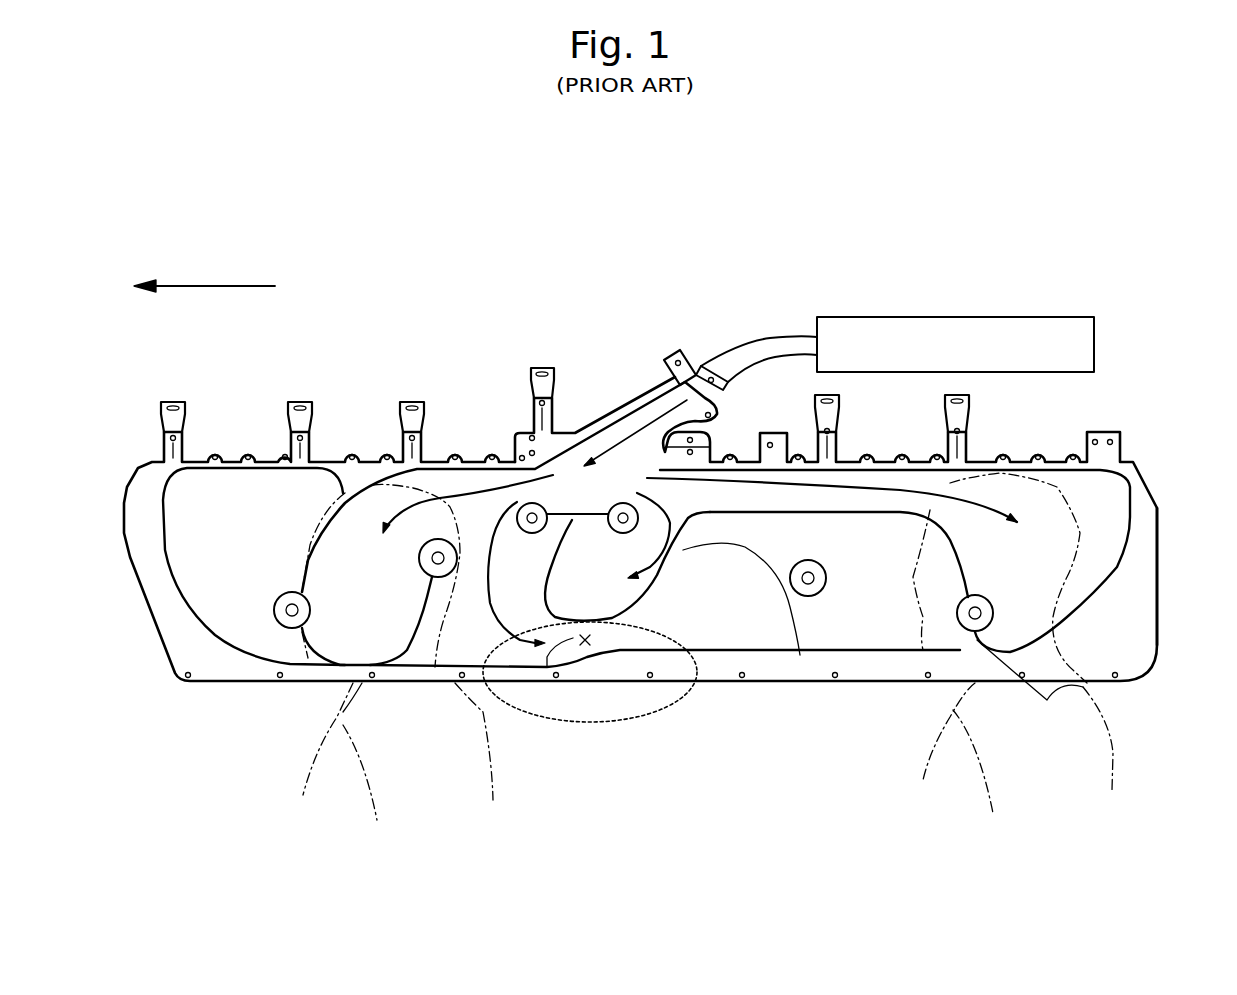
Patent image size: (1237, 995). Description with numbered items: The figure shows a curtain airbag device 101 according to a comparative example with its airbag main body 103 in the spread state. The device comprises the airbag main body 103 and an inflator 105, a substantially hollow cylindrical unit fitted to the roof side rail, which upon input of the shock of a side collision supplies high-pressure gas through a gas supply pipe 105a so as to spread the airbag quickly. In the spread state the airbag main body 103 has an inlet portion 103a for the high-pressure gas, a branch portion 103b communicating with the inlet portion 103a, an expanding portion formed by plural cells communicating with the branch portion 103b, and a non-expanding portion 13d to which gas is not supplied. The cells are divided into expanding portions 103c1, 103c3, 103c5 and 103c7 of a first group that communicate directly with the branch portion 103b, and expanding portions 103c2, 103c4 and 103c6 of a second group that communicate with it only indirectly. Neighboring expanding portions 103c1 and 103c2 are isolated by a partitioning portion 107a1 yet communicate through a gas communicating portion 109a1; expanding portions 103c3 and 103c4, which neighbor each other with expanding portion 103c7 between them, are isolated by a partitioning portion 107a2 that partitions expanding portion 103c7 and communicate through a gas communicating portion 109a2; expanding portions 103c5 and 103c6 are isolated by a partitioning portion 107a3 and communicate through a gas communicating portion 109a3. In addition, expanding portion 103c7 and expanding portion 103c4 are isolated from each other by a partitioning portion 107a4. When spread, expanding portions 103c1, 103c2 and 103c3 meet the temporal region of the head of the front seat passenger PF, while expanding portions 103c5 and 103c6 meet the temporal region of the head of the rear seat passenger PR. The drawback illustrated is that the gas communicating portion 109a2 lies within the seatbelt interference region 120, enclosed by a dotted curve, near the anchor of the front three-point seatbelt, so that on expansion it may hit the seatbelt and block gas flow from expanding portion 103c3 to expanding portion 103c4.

The curtain airbag device 101 is at (705, 200).
The airbag main body 103 is at (468, 362).
The inlet portion 103a is at (647, 394).
The branch portion 103b is at (556, 500).
The expanding portion 103c1 is at (341, 584).
The expanding portion 103c2 is at (209, 554).
The expanding portion 103c3 is at (470, 603).
The expanding portion 103c4 is at (719, 625).
The expanding portion 103c5 is at (987, 561).
The expanding portion 103c6 is at (839, 625).
The expanding portion 103c7 is at (564, 609).
The inflator 105 is at (952, 330).
The gas supply pipe 105a is at (770, 350).
The partitioning portion 107a1 is at (296, 598).
The partitioning portion 107a2 is at (665, 585).
The partitioning portion 107a3 is at (960, 560).
The partitioning portion 107a4 is at (808, 596).
The gas communicating portion 109a1 is at (297, 645).
The gas communicating portion 109a2 is at (548, 672).
The gas communicating portion 109a3 is at (967, 643).
The seatbelt interference region 120 is at (630, 725).
The non-expanding portion 13d is at (1130, 603).
The front seat passenger PF is at (378, 842).
The rear seat passenger PR is at (1000, 833).